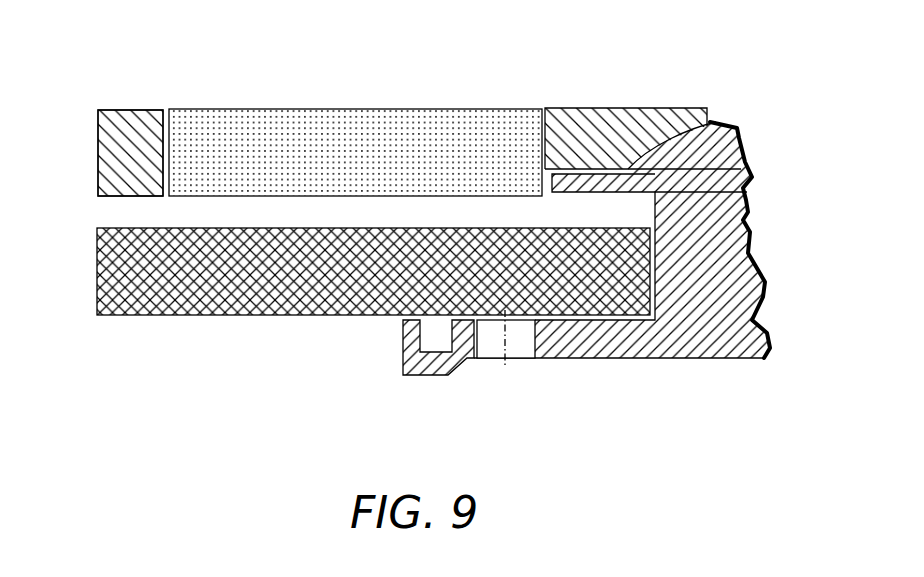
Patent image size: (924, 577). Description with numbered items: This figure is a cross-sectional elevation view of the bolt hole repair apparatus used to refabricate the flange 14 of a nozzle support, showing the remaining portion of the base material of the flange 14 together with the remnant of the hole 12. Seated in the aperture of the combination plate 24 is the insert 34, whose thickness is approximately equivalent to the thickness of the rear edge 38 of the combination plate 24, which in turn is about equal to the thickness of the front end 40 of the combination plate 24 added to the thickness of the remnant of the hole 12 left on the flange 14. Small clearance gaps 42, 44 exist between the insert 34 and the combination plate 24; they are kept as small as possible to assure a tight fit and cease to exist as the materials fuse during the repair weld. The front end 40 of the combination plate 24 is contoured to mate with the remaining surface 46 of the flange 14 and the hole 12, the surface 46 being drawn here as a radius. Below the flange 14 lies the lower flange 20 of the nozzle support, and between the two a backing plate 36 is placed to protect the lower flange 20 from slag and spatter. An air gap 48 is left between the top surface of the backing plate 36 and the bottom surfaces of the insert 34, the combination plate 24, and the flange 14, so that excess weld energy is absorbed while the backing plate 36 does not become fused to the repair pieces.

The hole 12 is at (548, 199).
The flange 14 is at (655, 187).
The lower flange 20 is at (639, 335).
The combination plate 24 is at (125, 143).
The insert 34 is at (350, 130).
The backing plate 36 is at (285, 293).
The rear edge 38 is at (97, 163).
The front end 40 is at (628, 86).
The clearance gap 42 is at (166, 108).
The clearance gap 44 is at (547, 110).
The remaining surface 46 is at (655, 174).
The air gap 48 is at (368, 212).